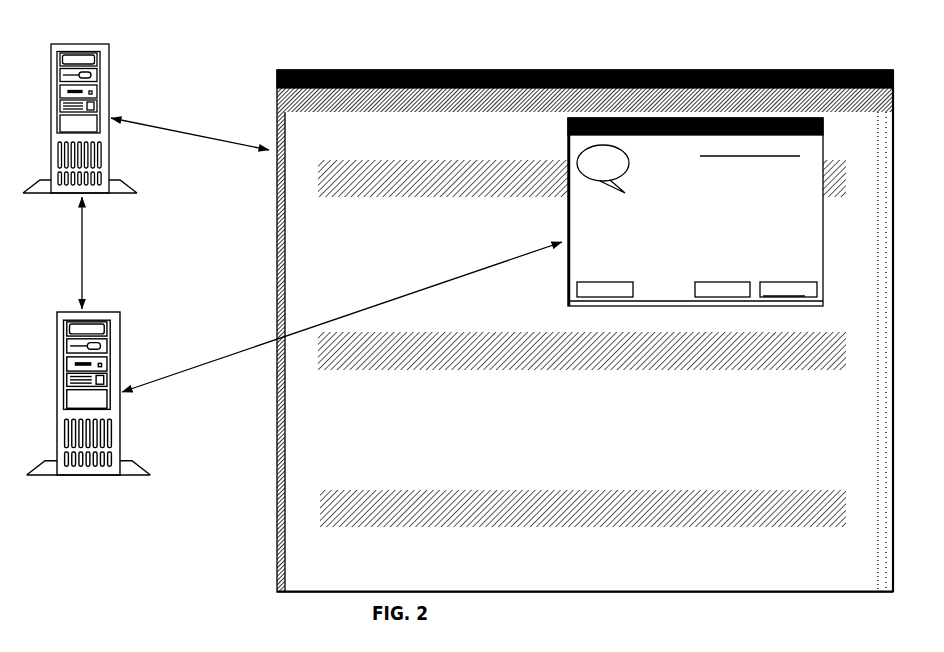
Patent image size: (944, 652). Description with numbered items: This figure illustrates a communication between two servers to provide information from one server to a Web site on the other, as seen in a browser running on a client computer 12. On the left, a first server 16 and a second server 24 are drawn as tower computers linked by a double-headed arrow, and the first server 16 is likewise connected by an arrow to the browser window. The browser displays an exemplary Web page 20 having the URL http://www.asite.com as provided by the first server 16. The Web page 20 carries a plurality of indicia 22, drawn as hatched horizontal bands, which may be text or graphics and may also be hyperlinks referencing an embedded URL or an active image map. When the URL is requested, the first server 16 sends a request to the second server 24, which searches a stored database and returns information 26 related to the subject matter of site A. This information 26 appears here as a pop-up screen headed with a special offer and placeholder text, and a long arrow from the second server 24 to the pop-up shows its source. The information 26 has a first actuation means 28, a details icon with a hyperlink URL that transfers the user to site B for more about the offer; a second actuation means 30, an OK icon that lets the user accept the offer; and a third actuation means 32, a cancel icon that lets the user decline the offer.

The client computer 12 is at (560, 312).
The first server 16 is at (105, 148).
The Web page 20 is at (305, 243).
The indicia 22 is at (380, 188).
The second server 24 is at (119, 312).
The information 26 is at (692, 221).
The first actuation means 28 is at (578, 293).
The second actuation means 30 is at (700, 291).
The third actuation means 32 is at (806, 296).